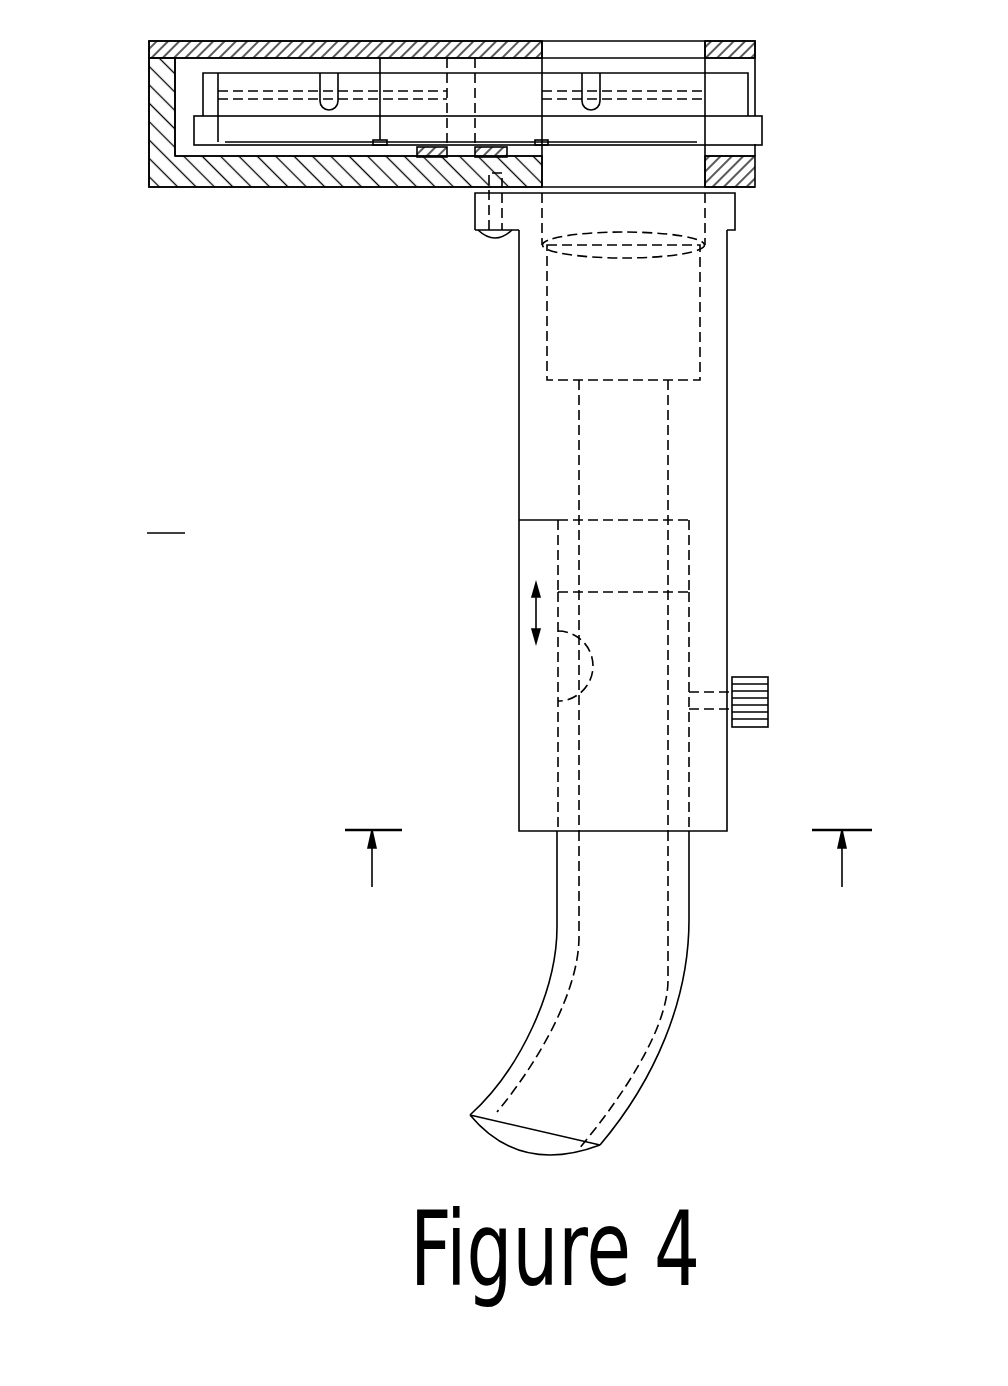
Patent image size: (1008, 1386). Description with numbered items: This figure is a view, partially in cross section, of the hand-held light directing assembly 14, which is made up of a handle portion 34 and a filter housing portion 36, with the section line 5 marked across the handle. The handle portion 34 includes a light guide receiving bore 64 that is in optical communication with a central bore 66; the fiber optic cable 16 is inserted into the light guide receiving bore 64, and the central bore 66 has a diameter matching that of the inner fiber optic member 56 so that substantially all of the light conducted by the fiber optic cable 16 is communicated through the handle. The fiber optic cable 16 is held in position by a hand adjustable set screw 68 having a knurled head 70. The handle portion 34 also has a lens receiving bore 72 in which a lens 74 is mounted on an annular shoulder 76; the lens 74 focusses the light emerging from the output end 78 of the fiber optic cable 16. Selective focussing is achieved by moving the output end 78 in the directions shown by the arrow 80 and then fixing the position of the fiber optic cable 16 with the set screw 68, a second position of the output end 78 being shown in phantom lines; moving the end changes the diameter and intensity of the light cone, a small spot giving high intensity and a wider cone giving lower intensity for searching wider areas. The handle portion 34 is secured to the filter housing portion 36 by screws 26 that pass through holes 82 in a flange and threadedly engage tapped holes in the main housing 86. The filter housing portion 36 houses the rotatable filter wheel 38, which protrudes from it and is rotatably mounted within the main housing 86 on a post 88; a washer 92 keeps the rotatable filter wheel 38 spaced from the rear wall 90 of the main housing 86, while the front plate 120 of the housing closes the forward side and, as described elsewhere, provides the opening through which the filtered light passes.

The hand-held light directing assembly 14 is at (166, 520).
The fiber optic cable 16 is at (625, 1028).
The screws 26 is at (492, 236).
The handle portion 34 is at (740, 498).
The filter housing portion 36 is at (137, 133).
The rotatable filter wheel 38 is at (752, 132).
The inner fiber optic member 56 is at (623, 789).
The light guide receiving bore 64 is at (558, 705).
The central bore 66 is at (578, 437).
The set screw 68 is at (707, 709).
The knurled head 70 is at (768, 695).
The lens receiving bore 72 is at (547, 337).
The lens 74 is at (672, 255).
The annular shoulder 76 is at (727, 227).
The output end 78 is at (638, 518).
The arrow 80 is at (533, 608).
The holes 82 is at (487, 210).
The main housing 86 is at (255, 178).
The post 88 is at (462, 66).
The rear wall 90 is at (305, 187).
The washer 92 is at (420, 152).
The front plate 120 is at (363, 41).
The section line 5- 5 is at (608, 858).